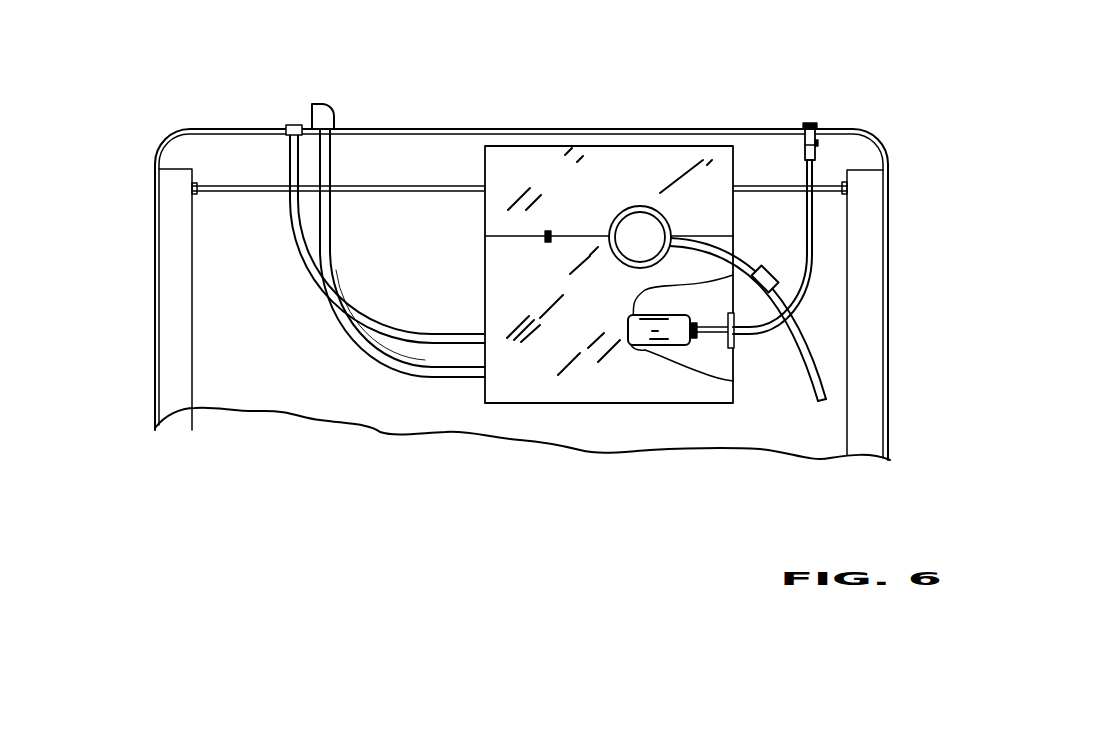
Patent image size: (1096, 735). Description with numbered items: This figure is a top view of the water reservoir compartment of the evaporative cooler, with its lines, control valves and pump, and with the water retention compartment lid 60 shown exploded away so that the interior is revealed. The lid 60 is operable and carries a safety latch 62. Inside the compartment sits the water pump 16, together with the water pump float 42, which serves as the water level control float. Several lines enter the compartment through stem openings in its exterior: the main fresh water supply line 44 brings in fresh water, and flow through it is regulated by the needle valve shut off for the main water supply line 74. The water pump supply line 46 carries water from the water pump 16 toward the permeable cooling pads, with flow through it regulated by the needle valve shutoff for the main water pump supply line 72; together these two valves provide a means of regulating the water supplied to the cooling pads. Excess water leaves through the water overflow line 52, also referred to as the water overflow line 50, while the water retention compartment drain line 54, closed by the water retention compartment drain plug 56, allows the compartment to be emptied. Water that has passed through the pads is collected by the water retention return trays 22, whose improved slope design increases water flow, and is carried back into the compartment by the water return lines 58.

The water pump 16 is at (645, 240).
The water return tray 22 is at (192, 368).
The water pump float 42 is at (680, 348).
The main fresh water supply line 44 is at (810, 207).
The water pump supply line 46 is at (823, 384).
The water overflow line 50 is at (337, 246).
The water overflow line 52 is at (333, 117).
The water retention compartment drain line 54 is at (290, 173).
The water retention compartment drain plug 56 is at (290, 125).
The water return lines 58 is at (237, 193).
The water retention compartment lid 60 is at (610, 198).
The safety latch 62 is at (548, 231).
The needle valve shutoff for main water pump supply line 72 is at (777, 270).
The needle valve shut off for main water supply line 74 is at (816, 150).